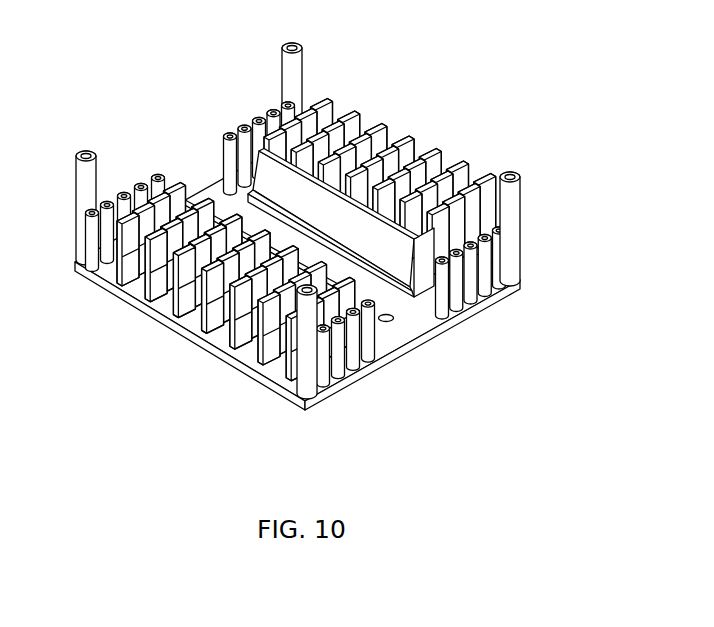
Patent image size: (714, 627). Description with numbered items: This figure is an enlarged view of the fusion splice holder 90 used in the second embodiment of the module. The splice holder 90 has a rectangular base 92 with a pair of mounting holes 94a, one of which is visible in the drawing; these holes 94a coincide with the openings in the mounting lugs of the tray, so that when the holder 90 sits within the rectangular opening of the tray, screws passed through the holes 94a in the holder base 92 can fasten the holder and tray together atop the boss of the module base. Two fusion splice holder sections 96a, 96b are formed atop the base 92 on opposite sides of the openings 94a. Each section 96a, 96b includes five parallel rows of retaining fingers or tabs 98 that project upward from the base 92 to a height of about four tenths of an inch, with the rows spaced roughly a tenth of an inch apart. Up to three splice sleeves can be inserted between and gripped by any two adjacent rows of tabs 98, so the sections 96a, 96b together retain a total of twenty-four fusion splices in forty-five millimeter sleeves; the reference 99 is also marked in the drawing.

The fusion splice holder 90 is at (505, 305).
The rectangular base 92 is at (216, 192).
The mounting hole 94a is at (394, 321).
The fusion splice holder section 96a is at (413, 172).
The fusion splice holder section 96b is at (245, 258).
The retaining tab 98 is at (128, 268).
The rail 99 is at (183, 193).